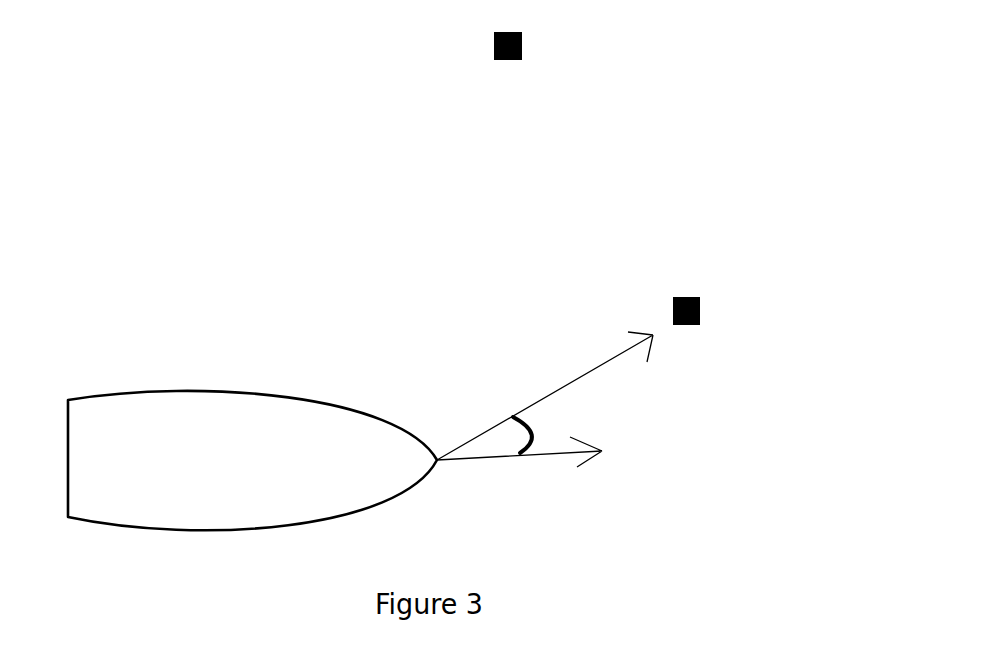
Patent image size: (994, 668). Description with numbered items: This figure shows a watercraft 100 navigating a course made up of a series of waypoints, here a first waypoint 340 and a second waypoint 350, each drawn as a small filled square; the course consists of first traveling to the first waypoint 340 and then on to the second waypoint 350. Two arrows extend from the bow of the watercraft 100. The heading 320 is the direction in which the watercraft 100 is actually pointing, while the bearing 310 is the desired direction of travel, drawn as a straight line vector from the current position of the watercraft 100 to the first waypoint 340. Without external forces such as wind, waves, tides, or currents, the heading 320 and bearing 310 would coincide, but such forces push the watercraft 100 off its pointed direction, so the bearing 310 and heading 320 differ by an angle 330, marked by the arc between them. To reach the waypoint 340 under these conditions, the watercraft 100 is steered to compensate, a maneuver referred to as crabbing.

The watercraft 100 is at (119, 372).
The bearing 310 is at (527, 408).
The heading 320 is at (552, 455).
The angle 330 is at (532, 433).
The first waypoint 340 is at (700, 307).
The second waypoint 350 is at (522, 38).